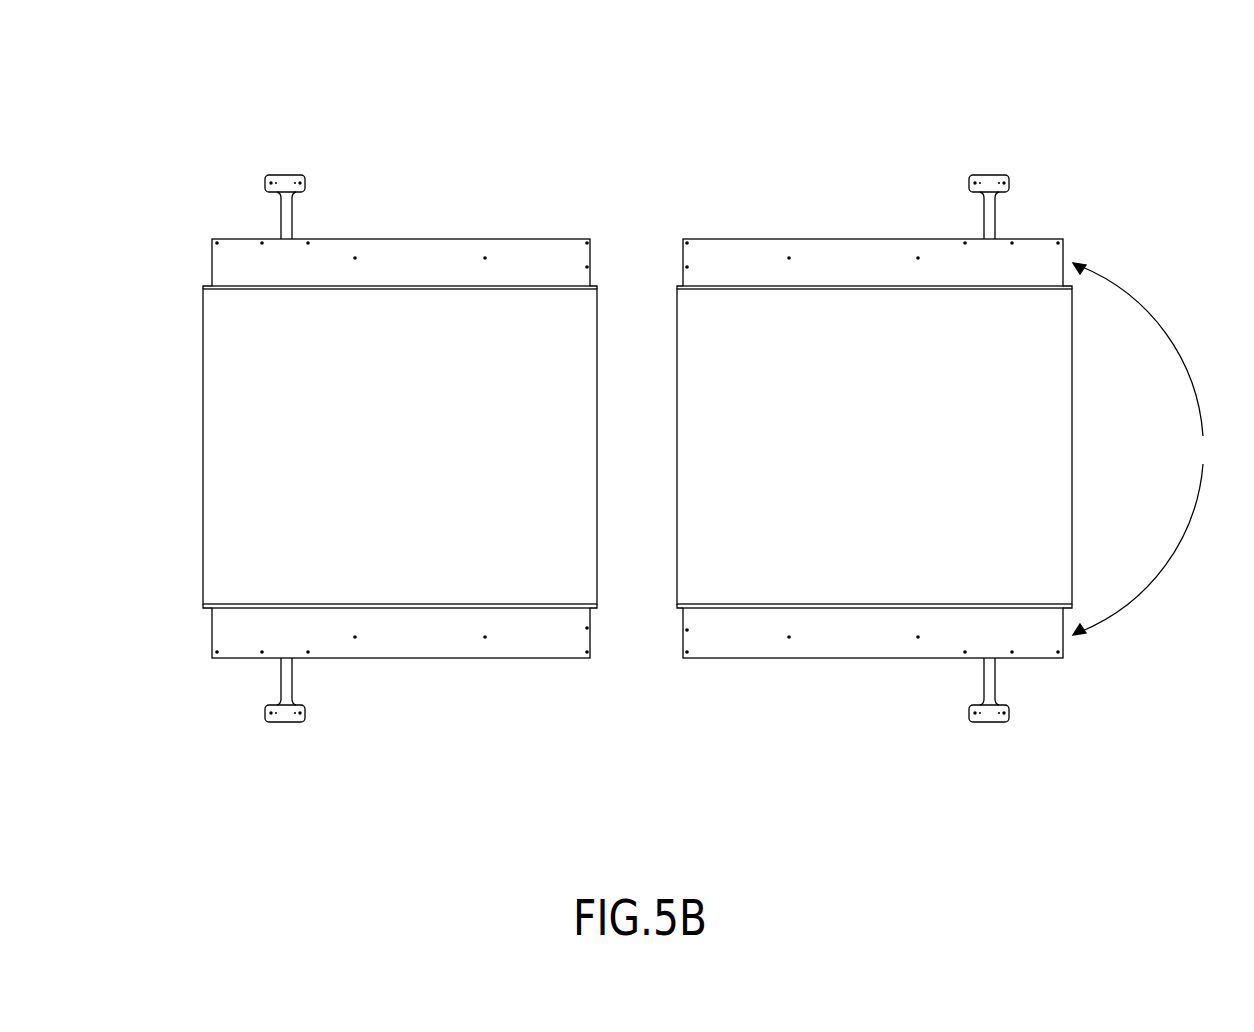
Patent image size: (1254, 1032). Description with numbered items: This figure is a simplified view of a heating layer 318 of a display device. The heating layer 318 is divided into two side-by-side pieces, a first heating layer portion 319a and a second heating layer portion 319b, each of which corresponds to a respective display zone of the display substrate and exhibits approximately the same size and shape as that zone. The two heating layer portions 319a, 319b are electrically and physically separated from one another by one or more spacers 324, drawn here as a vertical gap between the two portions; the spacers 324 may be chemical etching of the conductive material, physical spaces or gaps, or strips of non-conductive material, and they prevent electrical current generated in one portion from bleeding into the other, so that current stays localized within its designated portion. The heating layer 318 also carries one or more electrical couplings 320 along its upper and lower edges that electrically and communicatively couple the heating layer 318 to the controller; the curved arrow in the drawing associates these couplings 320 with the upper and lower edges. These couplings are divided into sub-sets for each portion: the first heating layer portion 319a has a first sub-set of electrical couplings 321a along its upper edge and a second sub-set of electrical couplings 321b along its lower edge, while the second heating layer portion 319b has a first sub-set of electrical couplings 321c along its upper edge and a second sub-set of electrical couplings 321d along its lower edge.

The heating layer 318 is at (122, 62).
The first heating layer portion 319a is at (202, 468).
The second heating layer portion 319b is at (1073, 467).
The electrical couplings 320 is at (1148, 449).
The first sub-set of electrical couplings 321a is at (429, 239).
The second sub-set of electrical couplings 321b is at (429, 658).
The first sub-set of electrical couplings of second heating layer portion 321c is at (845, 239).
The second sub-set of electrical couplings of second heating layer portion 321d is at (844, 658).
The spacers 324 is at (638, 287).